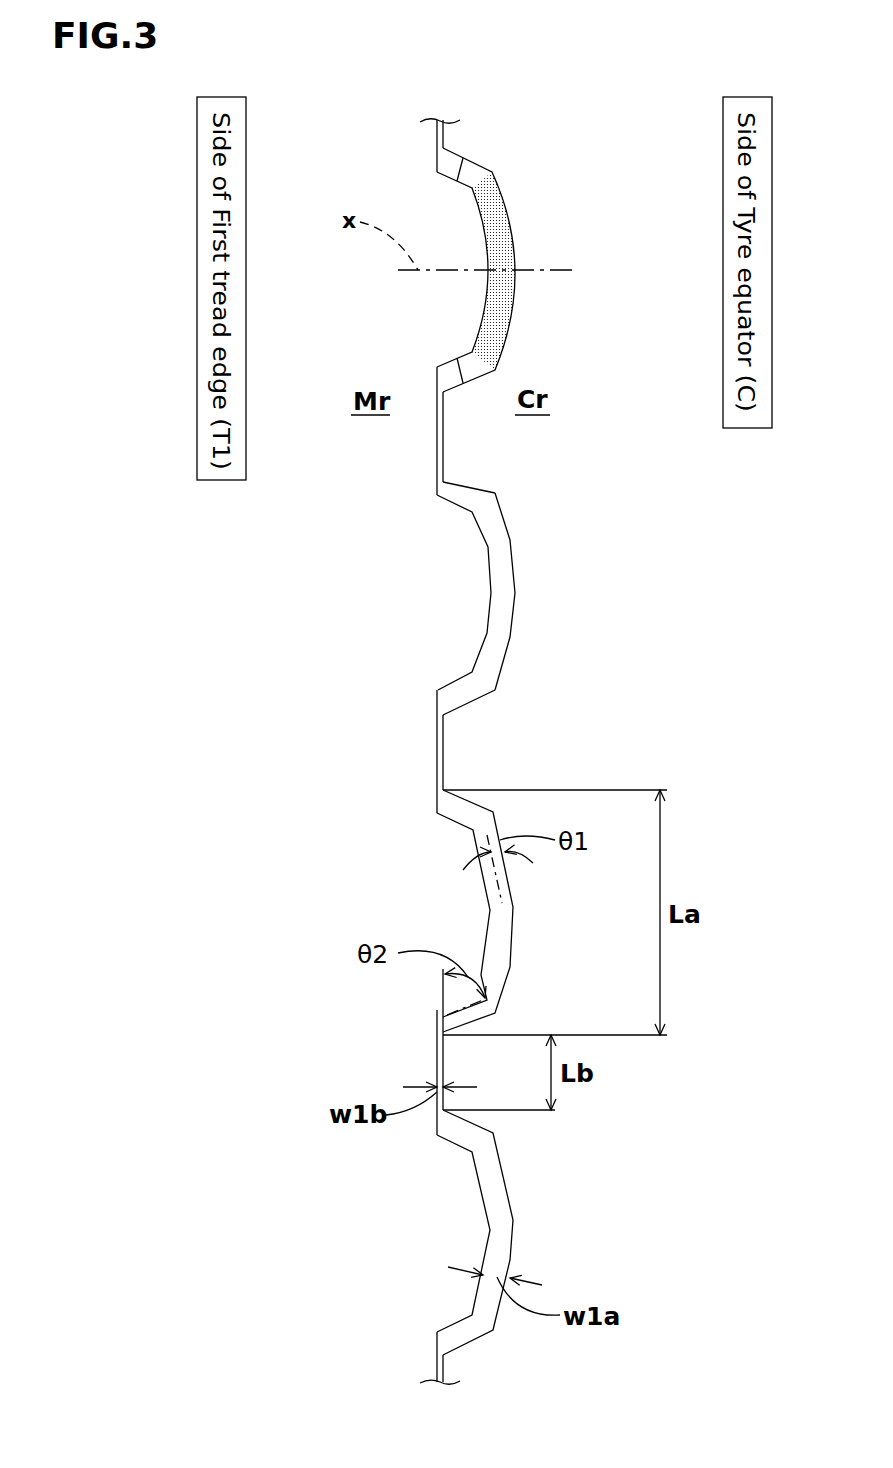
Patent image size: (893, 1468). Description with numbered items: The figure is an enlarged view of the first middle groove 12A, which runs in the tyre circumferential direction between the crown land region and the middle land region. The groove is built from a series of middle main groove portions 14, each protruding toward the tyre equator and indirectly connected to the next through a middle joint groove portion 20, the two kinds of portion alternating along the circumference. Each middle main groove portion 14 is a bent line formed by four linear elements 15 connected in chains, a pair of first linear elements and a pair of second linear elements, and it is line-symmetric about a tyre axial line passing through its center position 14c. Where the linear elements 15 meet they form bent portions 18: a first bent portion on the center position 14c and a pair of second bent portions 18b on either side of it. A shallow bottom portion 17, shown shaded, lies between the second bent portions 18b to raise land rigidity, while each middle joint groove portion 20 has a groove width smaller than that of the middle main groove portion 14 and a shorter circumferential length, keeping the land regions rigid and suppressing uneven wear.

The first middle groove 12A is at (403, 163).
The middle main groove portion 14 is at (495, 213).
The center position 14c is at (515, 268).
The linear element 15 is at (462, 490).
The shallow bottom portion 17 is at (493, 315).
The bent portion 18 is at (522, 592).
The second bent portion 18b is at (512, 488).
The middle joint groove portion 20 is at (437, 748).